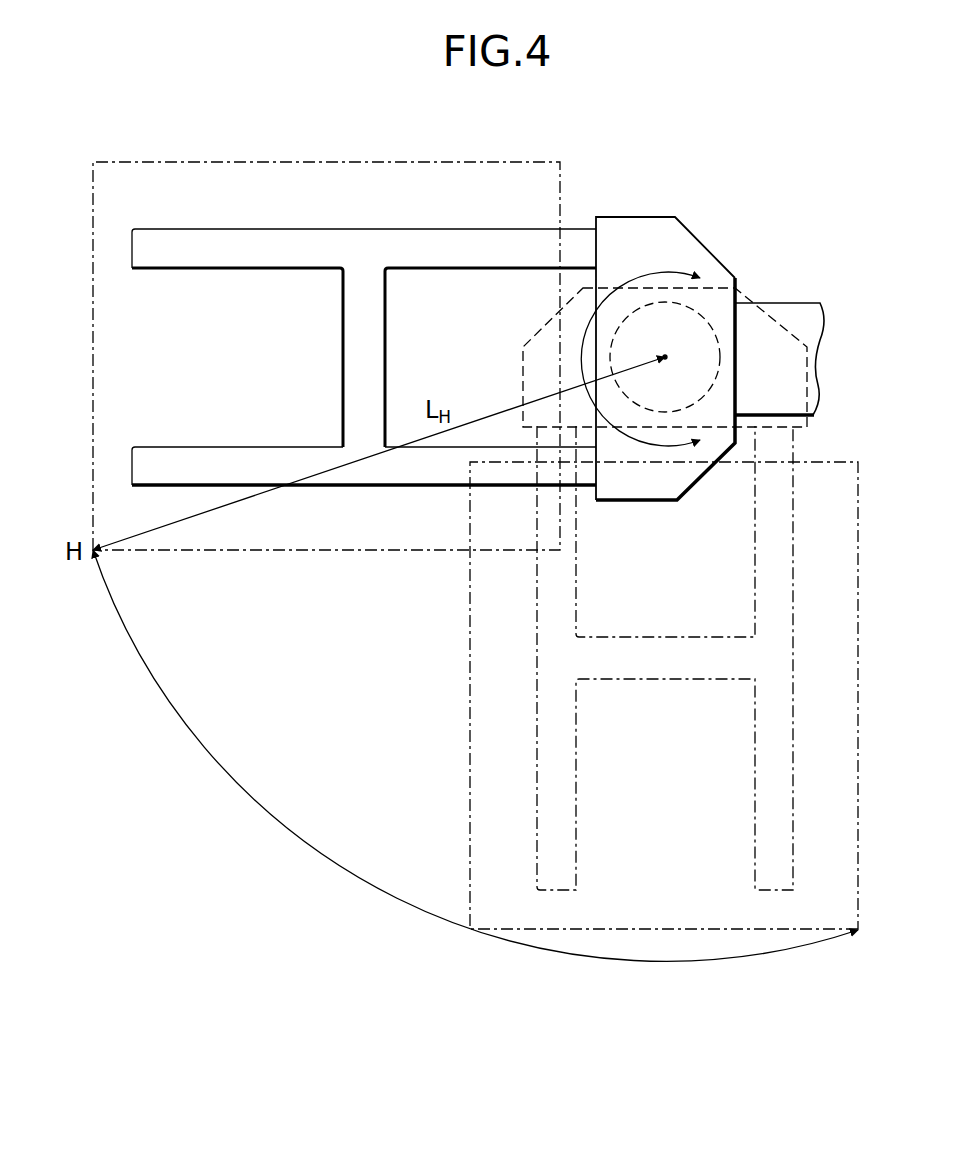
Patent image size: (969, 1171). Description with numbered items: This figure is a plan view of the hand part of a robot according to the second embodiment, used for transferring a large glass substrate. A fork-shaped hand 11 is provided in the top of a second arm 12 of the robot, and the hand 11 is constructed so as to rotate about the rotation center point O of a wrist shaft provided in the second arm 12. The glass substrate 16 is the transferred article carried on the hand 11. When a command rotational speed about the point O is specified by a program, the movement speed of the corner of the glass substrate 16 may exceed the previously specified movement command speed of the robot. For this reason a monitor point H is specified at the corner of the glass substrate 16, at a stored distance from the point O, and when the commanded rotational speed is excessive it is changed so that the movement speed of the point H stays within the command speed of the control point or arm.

The fork-shaped hand 11 is at (638, 217).
The second arm 12 is at (795, 303).
The glass substrate 16 is at (371, 162).